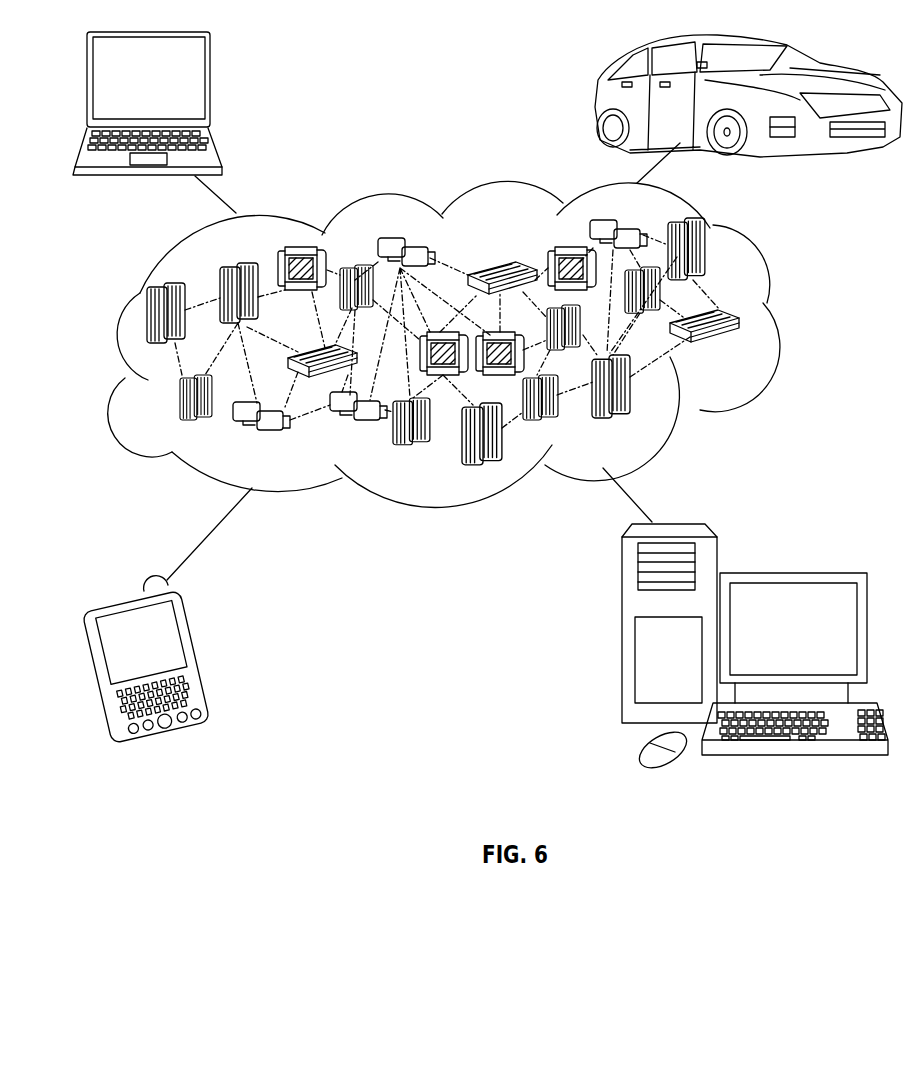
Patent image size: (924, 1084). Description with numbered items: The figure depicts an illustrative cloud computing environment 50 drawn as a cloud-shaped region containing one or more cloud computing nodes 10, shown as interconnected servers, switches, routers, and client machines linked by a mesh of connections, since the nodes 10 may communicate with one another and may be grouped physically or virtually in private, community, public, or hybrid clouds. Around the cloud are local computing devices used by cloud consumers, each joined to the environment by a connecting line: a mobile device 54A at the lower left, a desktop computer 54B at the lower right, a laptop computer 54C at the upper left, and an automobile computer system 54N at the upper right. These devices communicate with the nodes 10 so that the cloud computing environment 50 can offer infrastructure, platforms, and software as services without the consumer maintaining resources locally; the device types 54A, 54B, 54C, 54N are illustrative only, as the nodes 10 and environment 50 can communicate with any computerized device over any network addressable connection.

The cloud computing node 10 is at (746, 349).
The cloud computing environment 50 is at (787, 323).
The mobile device 54A is at (198, 657).
The desktop computer 54B is at (790, 572).
The laptop computer 54C is at (210, 87).
The automobile computer system 54N is at (598, 102).